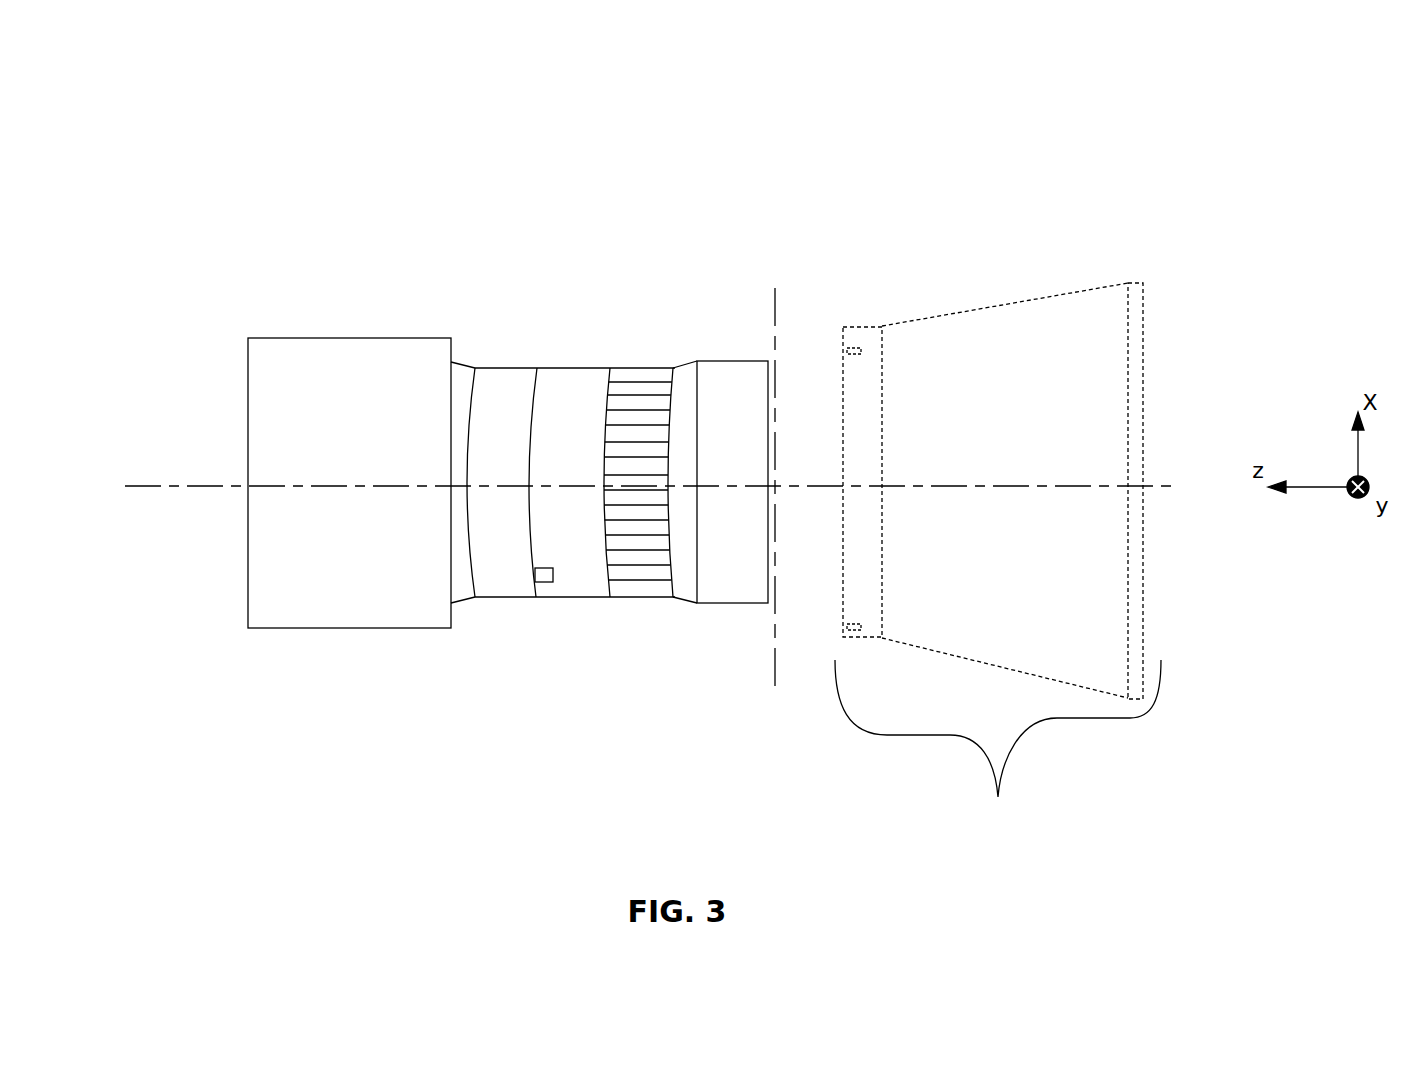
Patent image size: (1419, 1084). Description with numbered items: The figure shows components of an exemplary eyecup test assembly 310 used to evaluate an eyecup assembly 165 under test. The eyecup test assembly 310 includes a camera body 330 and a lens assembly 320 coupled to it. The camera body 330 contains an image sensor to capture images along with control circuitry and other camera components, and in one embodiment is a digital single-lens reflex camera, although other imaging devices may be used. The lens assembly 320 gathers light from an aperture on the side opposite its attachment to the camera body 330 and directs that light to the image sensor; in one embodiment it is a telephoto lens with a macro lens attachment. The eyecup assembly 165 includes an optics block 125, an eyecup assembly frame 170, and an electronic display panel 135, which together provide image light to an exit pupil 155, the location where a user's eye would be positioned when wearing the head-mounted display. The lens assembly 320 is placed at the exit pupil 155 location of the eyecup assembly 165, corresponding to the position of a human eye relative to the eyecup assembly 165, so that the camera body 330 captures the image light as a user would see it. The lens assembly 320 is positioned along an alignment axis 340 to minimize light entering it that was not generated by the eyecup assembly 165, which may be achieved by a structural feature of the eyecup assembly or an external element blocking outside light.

The eyecup test assembly 310 is at (215, 159).
The alignment axis 340 is at (218, 503).
The camera body 330 is at (349, 483).
The lens assembly 320 is at (595, 616).
The exit pupil 155 is at (753, 646).
The eyecup assembly 165 is at (952, 476).
The optics block 125 is at (826, 332).
The eyecup assembly frame 170 is at (1009, 287).
The electronic display panel 135 is at (1157, 393).